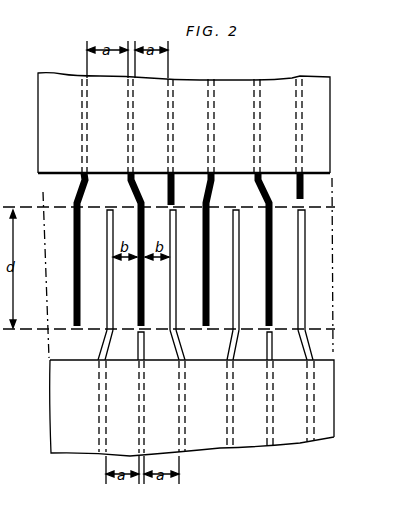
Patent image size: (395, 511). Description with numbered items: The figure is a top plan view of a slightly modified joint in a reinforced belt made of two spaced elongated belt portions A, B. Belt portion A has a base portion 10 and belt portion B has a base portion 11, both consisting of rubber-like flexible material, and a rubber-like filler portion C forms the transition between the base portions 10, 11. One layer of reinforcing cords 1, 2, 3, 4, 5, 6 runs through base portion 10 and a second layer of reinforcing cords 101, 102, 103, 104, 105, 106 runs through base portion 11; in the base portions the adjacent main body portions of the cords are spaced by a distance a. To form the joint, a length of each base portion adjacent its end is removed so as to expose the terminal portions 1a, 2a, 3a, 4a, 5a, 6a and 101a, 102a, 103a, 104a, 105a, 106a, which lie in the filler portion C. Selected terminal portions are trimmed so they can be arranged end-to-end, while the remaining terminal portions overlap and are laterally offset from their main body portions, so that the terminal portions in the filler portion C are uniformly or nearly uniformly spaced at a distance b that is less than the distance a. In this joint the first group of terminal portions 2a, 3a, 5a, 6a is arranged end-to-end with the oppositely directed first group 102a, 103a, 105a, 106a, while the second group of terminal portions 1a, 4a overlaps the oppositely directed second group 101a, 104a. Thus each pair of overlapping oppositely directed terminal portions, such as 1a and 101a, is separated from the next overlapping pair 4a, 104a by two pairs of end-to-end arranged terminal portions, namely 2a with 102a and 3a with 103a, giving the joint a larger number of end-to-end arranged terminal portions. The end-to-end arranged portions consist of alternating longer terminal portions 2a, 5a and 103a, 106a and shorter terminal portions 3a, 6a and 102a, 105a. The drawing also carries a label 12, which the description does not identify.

The reinforcing cord 1 is at (81, 108).
The reinforcing cord 2 is at (127, 111).
The reinforcing cord 3 is at (167, 125).
The reinforcing cord 4 is at (207, 124).
The reinforcing cord 5 is at (253, 123).
The reinforcing cord 6 is at (295, 127).
The base portion 10 is at (325, 146).
The base portion 11 is at (325, 422).
The boundary line of connection region 12 is at (36, 332).
The terminal portion 1a is at (73, 207).
The terminal portion 2a is at (137, 207).
The terminal portion 3a is at (168, 195).
The terminal portion 4a is at (204, 201).
The terminal portion 5a is at (265, 207).
The terminal portion 6a is at (304, 188).
The reinforcing cord 101 is at (99, 422).
The reinforcing cord 102 is at (138, 407).
The reinforcing cord 103 is at (179, 433).
The reinforcing cord 104 is at (224, 408).
The reinforcing cord 105 is at (267, 397).
The reinforcing cord 106 is at (307, 403).
The terminal portion 101a is at (108, 283).
The terminal portion 102a is at (139, 337).
The terminal portion 103a is at (177, 331).
The terminal portion 104a is at (240, 337).
The terminal portion 105a is at (272, 347).
The terminal portion 106a is at (298, 283).
The belt portion A is at (339, 88).
The belt portion B is at (343, 398).
The filler portion C is at (335, 250).